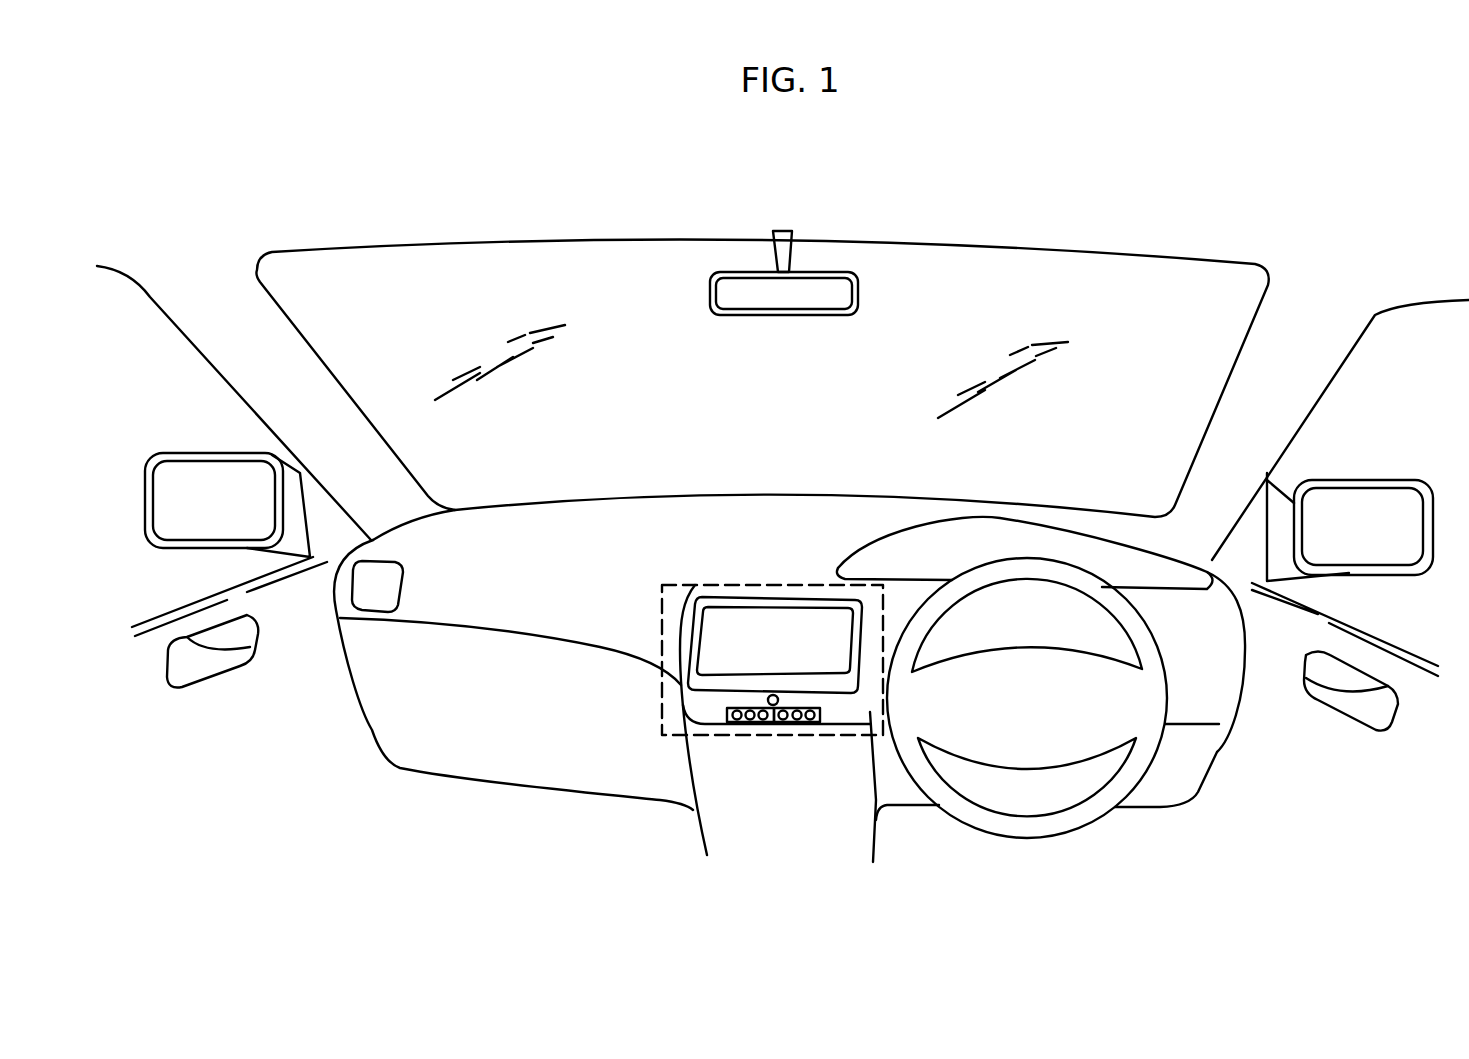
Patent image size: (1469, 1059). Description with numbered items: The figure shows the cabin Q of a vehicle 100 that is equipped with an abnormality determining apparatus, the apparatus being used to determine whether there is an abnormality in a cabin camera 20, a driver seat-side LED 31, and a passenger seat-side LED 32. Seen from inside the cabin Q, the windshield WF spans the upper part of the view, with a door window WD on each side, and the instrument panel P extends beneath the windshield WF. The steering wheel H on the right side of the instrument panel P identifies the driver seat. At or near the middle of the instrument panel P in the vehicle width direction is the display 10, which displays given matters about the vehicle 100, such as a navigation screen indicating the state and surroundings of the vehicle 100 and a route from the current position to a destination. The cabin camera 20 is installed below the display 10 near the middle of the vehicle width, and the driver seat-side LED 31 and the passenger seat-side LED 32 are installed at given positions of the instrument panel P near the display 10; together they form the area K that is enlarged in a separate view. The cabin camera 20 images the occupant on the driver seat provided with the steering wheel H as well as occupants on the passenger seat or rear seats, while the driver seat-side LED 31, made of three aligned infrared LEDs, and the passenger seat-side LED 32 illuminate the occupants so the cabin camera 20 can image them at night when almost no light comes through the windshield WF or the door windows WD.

The vehicle 100 is at (1111, 150).
The display 10 is at (803, 632).
The cabin camera 20 is at (781, 702).
The driver seat-side LED 31 is at (792, 723).
The passenger seat-side LED 32 is at (742, 723).
The windshield WF is at (921, 298).
The door window WD is at (163, 353).
The instrument panel P is at (593, 540).
The steering wheel H is at (1043, 557).
The area K is at (745, 583).
The cabin Q is at (473, 848).